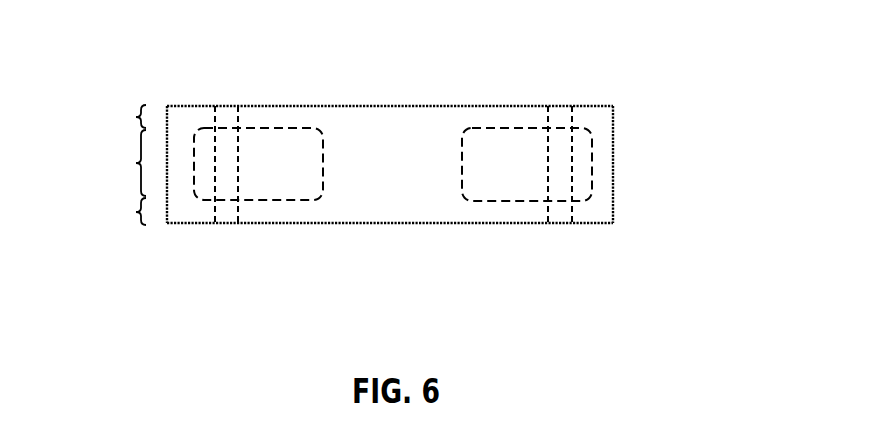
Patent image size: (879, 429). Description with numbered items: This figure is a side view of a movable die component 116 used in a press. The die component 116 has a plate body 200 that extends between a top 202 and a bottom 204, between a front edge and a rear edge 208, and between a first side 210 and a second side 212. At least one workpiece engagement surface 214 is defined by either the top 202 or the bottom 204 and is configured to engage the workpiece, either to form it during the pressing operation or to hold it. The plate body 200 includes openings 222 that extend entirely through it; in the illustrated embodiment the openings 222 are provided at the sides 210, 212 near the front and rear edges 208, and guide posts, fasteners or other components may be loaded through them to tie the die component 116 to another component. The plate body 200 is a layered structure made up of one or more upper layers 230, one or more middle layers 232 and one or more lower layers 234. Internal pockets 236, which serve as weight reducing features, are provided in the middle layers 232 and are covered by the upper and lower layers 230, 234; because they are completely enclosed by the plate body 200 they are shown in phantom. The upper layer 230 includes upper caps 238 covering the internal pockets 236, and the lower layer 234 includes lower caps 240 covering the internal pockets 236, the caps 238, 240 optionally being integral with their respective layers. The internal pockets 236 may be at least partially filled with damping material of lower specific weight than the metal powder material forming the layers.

The movable die component 116 is at (651, 47).
The plate body 200 is at (405, 130).
The top 202 is at (437, 106).
The bottom 204 is at (453, 224).
The rear edge 208 is at (388, 170).
The first side 210 is at (613, 166).
The second side 212 is at (167, 157).
The workpiece engagement surface 214 is at (345, 234).
The openings 222 is at (565, 104).
The upper layers 230 is at (136, 117).
The middle layers 232 is at (136, 163).
The lower layers 234 is at (136, 212).
The internal pockets 236 is at (518, 156).
The upper caps 238 is at (258, 112).
The lower caps 240 is at (260, 218).